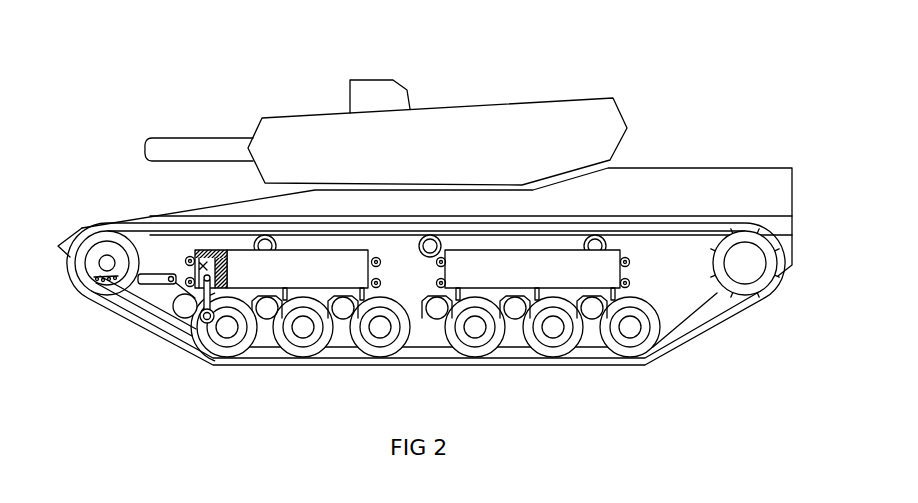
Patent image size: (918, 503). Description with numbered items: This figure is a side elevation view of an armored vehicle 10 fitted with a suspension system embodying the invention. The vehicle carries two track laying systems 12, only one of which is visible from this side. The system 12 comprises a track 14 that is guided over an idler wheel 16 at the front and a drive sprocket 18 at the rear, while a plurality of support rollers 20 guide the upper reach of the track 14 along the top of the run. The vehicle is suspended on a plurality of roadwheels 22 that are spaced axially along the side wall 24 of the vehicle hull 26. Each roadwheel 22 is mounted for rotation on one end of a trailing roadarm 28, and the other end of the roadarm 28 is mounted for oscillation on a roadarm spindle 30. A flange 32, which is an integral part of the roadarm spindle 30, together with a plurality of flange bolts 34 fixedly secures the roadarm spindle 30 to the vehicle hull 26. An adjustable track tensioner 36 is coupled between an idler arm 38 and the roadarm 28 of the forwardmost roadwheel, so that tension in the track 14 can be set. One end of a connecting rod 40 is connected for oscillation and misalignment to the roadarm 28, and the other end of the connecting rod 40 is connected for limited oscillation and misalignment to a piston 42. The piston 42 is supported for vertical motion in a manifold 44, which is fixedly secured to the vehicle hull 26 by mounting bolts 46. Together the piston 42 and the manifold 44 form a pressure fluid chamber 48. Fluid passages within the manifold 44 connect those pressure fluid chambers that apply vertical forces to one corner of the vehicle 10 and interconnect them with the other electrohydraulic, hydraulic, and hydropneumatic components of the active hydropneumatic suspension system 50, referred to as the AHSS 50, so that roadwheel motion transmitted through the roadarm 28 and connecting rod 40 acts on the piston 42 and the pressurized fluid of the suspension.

The armored vehicle 10 is at (628, 96).
The track laying system 12 is at (479, 380).
The track 14 is at (575, 360).
The idler wheel 16 is at (83, 228).
The drive sprocket 18 is at (738, 296).
The support rollers 20 is at (596, 236).
The roadwheels 22 is at (218, 333).
The side wall 24 is at (681, 281).
The vehicle hull 26 is at (703, 165).
The trailing roadarm 28 is at (185, 320).
The roadarm spindle 30 is at (187, 314).
The flange 32 is at (158, 296).
The flange bolts 34 is at (137, 280).
The adjustable track tensioner 36 is at (153, 270).
The idler arm 38 is at (93, 280).
The connecting rod 40 is at (207, 324).
The piston 42 is at (227, 247).
The manifold 44 is at (352, 250).
The mounting bolts 46 is at (383, 268).
The pressure fluid chamber 48 is at (195, 252).
The active hydropneumatic suspension system 50 is at (303, 270).